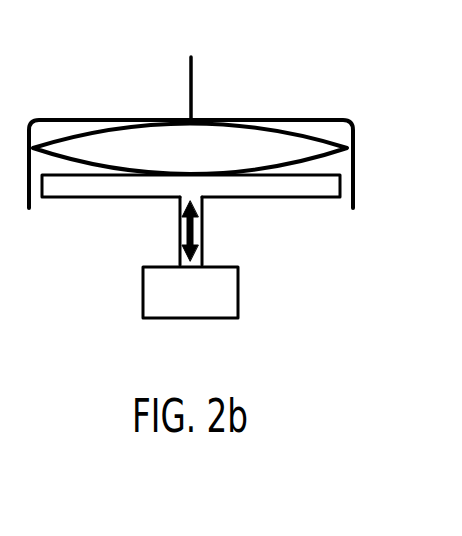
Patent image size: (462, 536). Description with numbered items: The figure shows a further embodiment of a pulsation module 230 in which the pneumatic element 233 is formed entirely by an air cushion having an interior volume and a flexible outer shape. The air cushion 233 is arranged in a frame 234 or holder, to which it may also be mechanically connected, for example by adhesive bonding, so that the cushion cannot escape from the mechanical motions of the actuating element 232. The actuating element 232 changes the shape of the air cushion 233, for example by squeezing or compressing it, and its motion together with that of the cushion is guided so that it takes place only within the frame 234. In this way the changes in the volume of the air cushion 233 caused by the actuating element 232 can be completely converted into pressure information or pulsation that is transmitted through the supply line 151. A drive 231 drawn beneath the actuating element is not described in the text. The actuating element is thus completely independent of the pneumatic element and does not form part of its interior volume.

The supply line 151 is at (192, 78).
The pulsation module 230 is at (87, 283).
The actuator / drive 231 is at (239, 292).
The actuating element 232 is at (273, 198).
The pneumatic element 233 is at (273, 135).
The frame 234 is at (354, 162).